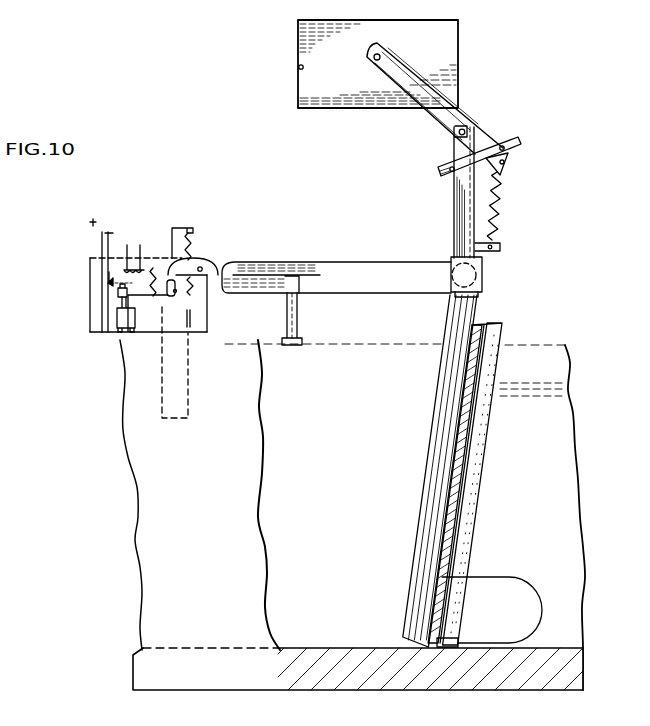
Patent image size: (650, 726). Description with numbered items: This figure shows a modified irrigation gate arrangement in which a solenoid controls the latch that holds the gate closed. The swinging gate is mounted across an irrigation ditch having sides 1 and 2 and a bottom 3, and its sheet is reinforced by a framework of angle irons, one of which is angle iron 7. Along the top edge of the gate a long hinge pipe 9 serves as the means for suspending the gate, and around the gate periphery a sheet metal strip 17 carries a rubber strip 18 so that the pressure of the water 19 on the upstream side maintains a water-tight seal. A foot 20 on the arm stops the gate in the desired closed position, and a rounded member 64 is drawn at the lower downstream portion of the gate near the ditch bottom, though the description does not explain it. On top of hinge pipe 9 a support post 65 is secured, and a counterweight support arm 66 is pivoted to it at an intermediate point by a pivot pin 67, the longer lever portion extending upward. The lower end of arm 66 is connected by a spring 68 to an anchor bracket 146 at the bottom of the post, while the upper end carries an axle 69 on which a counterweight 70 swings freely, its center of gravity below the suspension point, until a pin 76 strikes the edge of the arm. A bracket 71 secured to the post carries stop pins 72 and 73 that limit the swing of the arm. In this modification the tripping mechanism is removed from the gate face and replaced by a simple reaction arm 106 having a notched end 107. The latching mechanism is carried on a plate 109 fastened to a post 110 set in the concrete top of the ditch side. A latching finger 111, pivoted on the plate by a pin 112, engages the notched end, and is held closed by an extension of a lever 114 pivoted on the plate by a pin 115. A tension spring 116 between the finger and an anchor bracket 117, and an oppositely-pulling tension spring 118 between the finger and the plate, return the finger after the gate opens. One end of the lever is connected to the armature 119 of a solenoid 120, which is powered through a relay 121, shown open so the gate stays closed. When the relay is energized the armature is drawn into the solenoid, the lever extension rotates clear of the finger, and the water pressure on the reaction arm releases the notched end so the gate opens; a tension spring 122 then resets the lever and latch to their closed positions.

The ditch side 1 is at (263, 511).
The ditch side 2 is at (549, 343).
The ditch bottom 3 is at (302, 648).
The angle iron 7 is at (404, 606).
The hinge pipe 9 is at (484, 276).
The sheet metal strip 17 is at (480, 535).
The rubber strip 18 is at (481, 553).
The water 19 is at (562, 510).
The foot 20 is at (298, 325).
The bumper 64 is at (527, 600).
The support post 65 is at (454, 207).
The counterweight support arm 66 is at (456, 96).
The pivot pin 67 is at (455, 130).
The spring 68 is at (497, 217).
The axle 69 is at (381, 58).
The counterweight 70 is at (297, 50).
The bracket 71 is at (521, 141).
The stop pin 72 is at (503, 145).
The stop pin 73 is at (448, 171).
The pin 76 is at (298, 69).
The reaction arm 106 is at (345, 262).
The notched end 107 is at (240, 268).
The plate 109 is at (90, 282).
The post 110 is at (192, 413).
The latching finger 111 is at (232, 263).
The pin 112 is at (204, 266).
The lever 114 is at (183, 311).
The pin 115 is at (193, 296).
The tension spring 116 is at (191, 250).
The anchor bracket 117 is at (174, 226).
The tension spring 118 is at (178, 290).
The armature 119 is at (117, 292).
The solenoid 120 is at (136, 324).
The relay 121 is at (143, 268).
The tension spring 122 is at (153, 268).
The anchor bracket 146 is at (501, 249).